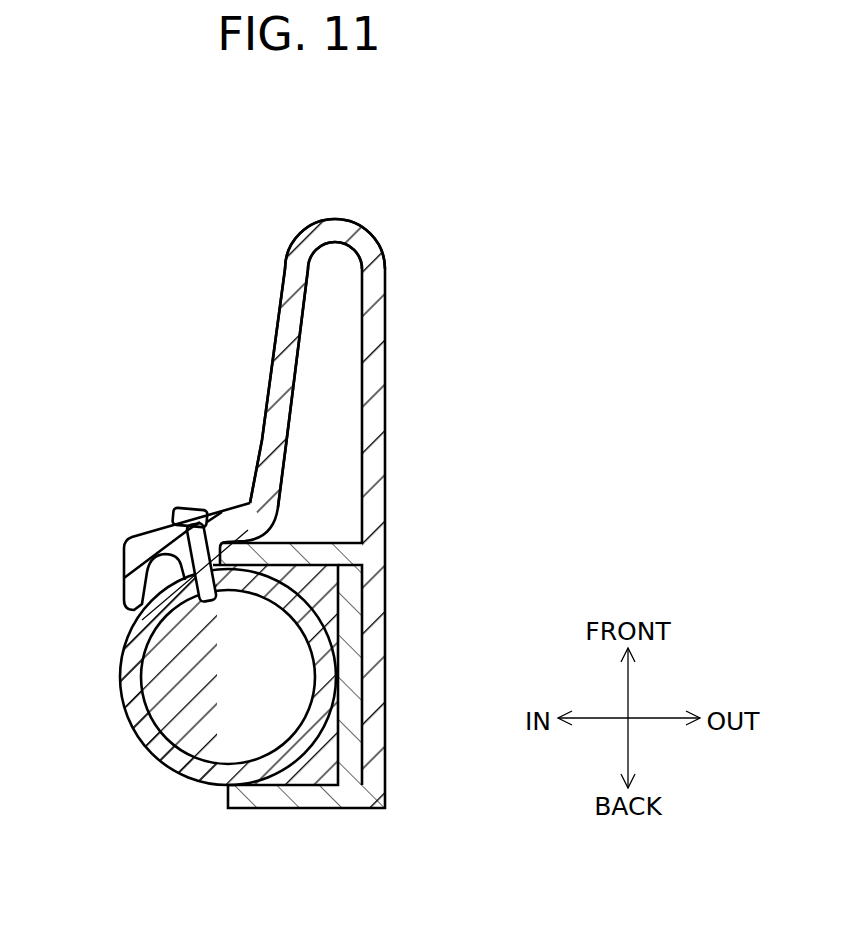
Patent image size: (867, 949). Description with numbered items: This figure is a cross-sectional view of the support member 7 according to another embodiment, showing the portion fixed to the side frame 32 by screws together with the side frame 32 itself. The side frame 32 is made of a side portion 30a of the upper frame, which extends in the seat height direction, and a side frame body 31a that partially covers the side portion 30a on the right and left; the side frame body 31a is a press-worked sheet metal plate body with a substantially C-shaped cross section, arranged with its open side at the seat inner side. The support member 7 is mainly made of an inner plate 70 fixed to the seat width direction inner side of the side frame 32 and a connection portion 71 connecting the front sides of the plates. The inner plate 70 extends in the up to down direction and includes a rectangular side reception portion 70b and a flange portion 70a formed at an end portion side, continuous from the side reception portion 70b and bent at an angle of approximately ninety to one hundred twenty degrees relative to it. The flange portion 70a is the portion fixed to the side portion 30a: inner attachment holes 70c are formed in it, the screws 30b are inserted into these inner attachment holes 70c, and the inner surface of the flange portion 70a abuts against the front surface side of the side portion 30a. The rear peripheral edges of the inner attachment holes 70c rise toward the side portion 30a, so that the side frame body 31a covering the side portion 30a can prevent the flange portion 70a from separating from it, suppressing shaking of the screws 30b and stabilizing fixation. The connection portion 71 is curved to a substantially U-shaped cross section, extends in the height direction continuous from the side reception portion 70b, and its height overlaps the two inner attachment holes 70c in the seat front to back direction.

The support member 7 is at (265, 473).
The connection portion 71 is at (334, 233).
The inner plate 70 is at (180, 444).
The flange portion 70a is at (140, 545).
The side reception portion 70b is at (270, 467).
The inner attachment holes 70c is at (198, 508).
The side portion 30a is at (180, 783).
The screws 30b is at (183, 512).
The side frame body 31a is at (268, 797).
The side frame 32 is at (229, 682).